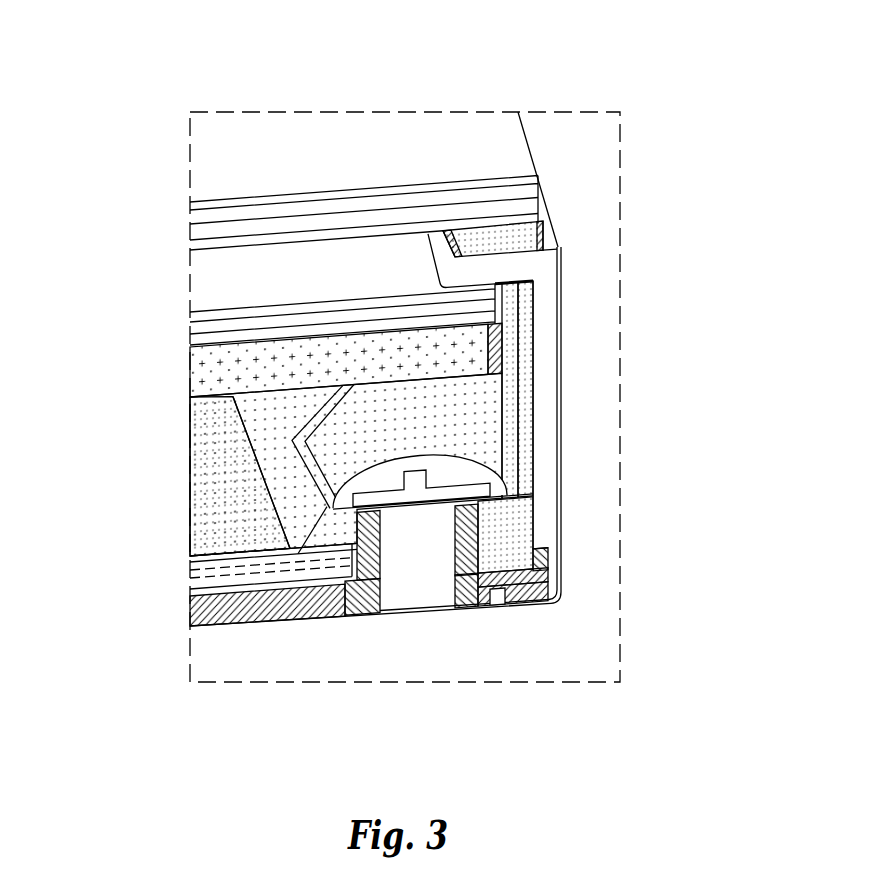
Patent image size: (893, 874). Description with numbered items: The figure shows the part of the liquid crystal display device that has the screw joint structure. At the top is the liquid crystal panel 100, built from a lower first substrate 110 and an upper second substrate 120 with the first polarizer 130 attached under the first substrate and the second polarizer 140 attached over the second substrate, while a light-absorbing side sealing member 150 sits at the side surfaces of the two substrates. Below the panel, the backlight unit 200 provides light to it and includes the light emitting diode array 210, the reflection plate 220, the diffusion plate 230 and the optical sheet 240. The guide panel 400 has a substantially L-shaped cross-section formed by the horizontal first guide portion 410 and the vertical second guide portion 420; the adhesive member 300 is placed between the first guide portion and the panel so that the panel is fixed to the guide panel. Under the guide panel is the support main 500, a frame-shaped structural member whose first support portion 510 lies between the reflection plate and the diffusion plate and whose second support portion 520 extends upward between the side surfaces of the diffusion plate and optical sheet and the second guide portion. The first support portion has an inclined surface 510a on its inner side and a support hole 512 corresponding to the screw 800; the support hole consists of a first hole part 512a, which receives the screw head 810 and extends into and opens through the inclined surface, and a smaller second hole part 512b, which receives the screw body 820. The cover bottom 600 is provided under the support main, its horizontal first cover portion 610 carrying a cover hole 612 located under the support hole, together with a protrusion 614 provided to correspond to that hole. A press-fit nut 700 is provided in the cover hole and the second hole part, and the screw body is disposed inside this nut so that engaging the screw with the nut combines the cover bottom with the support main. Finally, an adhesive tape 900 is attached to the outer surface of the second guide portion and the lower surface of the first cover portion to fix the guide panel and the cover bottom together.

The liquid crystal panel 100 is at (364, 132).
The first substrate 110 is at (233, 232).
The second substrate 120 is at (322, 208).
The first polarizer 130 is at (240, 70).
The second polarizer 140 is at (432, 189).
The side sealing member 150 is at (552, 199).
The backlight unit 200 is at (256, 442).
The light emitting diode array 210 is at (219, 572).
The reflection plate 220 is at (190, 568).
The diffusion plate 230 is at (196, 381).
The optical sheet 240 is at (187, 306).
The adhesive member 300 is at (538, 233).
The guide panel 400 is at (586, 397).
The first guide portion 410 is at (515, 262).
The second guide portion 420 is at (545, 298).
The support main 500 is at (475, 515).
The first support portion 510 is at (447, 561).
The inclined surface 510a is at (278, 465).
The second support portion 520 is at (527, 343).
The support hole 512 is at (631, 427).
The first hole part 512a is at (521, 467).
The second hole part 512b is at (480, 527).
The cover bottom 600 is at (199, 646).
The first cover portion 610 is at (190, 603).
The cover hole 612 is at (500, 598).
The protrusion 614 is at (537, 583).
The press-fit nut 700 is at (468, 606).
The screw 800 is at (421, 614).
The screw head 810 is at (345, 506).
The screw body 820 is at (412, 577).
The adhesive tape 900 is at (563, 535).